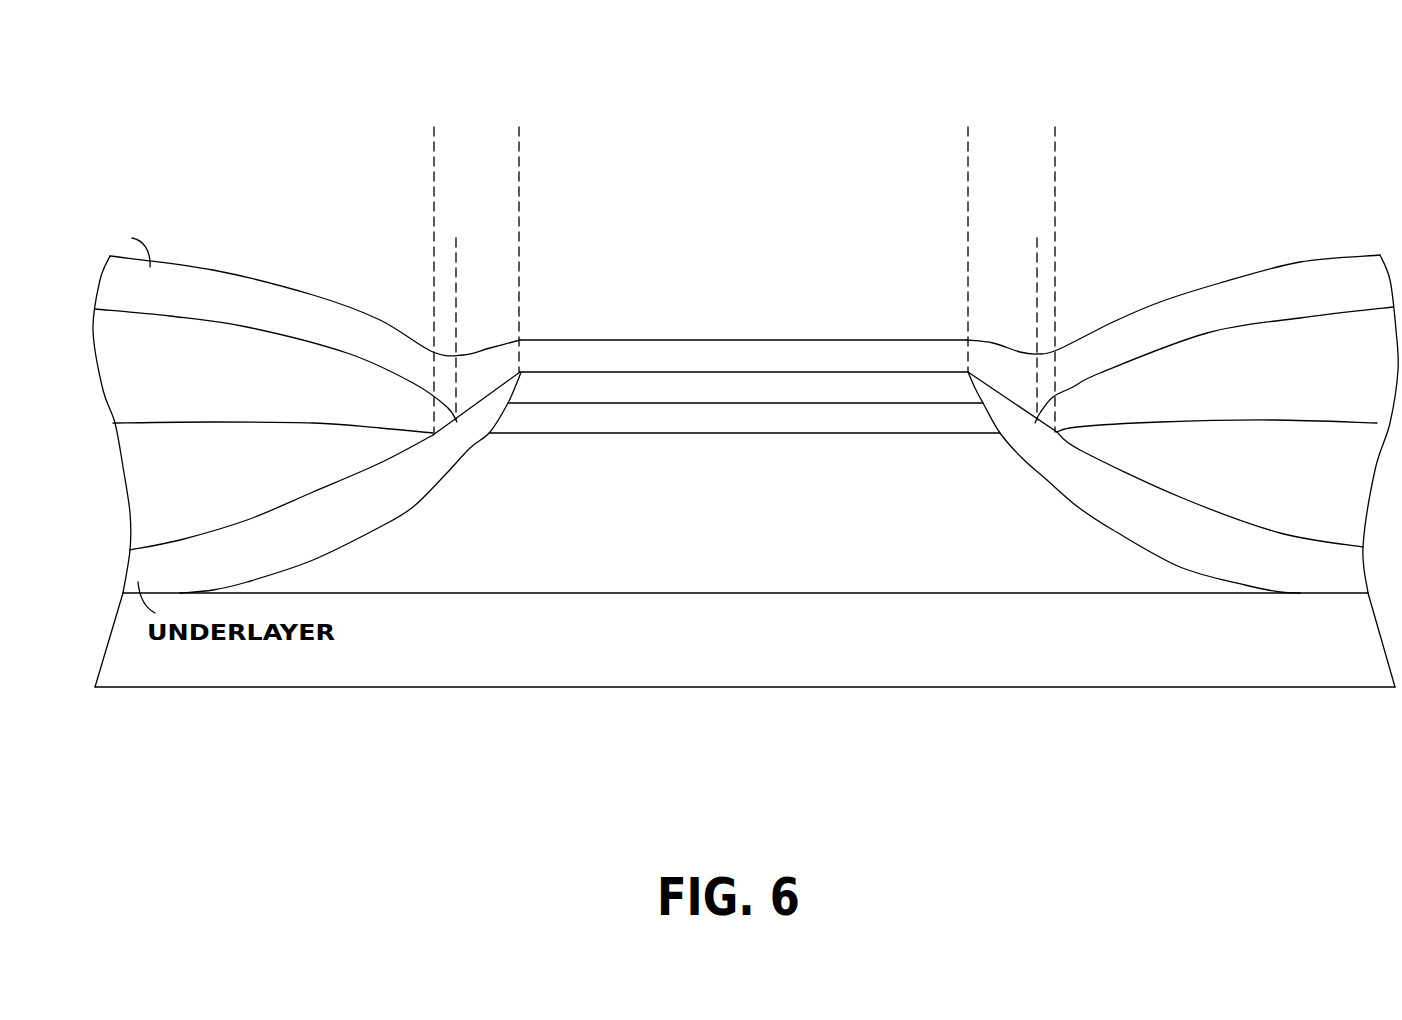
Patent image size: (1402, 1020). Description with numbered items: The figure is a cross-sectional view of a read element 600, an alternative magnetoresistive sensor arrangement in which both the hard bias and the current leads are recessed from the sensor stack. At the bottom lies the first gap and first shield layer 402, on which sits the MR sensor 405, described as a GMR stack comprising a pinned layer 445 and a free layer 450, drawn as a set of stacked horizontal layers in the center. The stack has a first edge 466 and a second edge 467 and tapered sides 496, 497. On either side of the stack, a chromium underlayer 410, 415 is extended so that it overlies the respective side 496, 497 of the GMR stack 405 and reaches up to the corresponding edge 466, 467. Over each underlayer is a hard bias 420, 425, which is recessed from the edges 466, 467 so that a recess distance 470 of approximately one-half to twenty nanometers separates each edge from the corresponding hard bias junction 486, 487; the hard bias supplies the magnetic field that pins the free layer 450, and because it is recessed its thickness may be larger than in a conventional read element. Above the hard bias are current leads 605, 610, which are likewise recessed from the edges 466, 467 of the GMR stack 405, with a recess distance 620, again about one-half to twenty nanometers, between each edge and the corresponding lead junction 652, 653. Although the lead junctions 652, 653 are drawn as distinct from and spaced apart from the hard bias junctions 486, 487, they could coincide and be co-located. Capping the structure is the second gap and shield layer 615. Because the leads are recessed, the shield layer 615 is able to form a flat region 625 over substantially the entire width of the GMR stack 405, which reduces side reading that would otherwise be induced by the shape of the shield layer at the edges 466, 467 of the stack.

The read element 600 is at (760, 42).
The first gap and first shield layer 402 is at (837, 653).
The MR sensor 405 is at (1030, 596).
The chromium underlayer 410 is at (213, 583).
The chromium underlayer 415 is at (1338, 583).
The hard bias 420 is at (213, 512).
The hard bias 425 is at (1333, 513).
The pinned layer 445 is at (745, 421).
The free layer 450 is at (745, 391).
The edge of GMR stack 466 is at (521, 370).
The edge of GMR stack 467 is at (967, 370).
The recess distance 470 is at (519, 137).
The hard bias junction 486 is at (432, 432).
The hard bias junction 487 is at (1058, 432).
The side of GMR stack 496 is at (383, 528).
The side of GMR stack 497 is at (1110, 528).
The current lead 605 is at (213, 402).
The current lead 610 is at (1337, 398).
The shield layer 615 is at (213, 303).
The recess distance 620 is at (519, 247).
The flat region 625 is at (968, 247).
The lead junction 652 is at (458, 422).
The lead junction 653 is at (1036, 424).